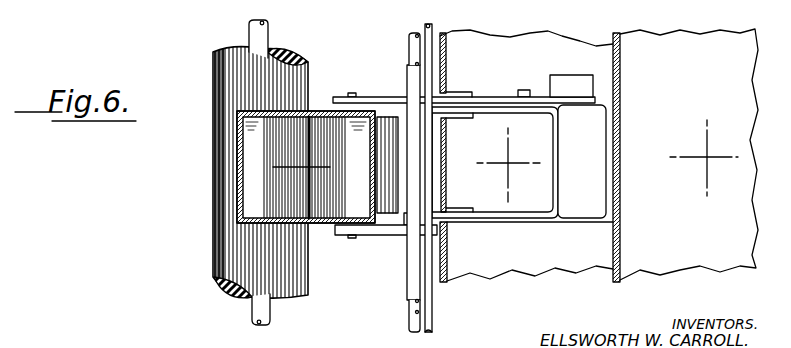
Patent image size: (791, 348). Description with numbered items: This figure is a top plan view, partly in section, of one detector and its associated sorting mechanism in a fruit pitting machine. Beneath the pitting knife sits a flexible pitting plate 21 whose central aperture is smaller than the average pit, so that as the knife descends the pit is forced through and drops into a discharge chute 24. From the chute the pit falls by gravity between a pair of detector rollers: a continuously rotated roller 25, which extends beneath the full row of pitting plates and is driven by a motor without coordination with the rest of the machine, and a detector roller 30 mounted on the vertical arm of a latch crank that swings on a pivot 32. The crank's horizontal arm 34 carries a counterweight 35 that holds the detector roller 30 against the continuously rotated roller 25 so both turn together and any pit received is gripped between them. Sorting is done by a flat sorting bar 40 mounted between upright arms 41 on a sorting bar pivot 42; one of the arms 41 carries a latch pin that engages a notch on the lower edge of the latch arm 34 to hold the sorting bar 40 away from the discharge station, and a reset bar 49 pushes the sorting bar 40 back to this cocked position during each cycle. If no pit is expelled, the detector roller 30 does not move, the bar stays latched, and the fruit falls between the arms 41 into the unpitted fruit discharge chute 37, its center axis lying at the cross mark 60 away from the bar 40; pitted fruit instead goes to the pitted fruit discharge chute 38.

The pitting plate 21 is at (268, 20).
The discharge chute 24 is at (310, 111).
The continuously rotated roller 25 is at (214, 173).
The detector roller 30 is at (387, 215).
The pivot 32 is at (408, 76).
The horizontal arm 34 is at (488, 97).
The counterweight 35 is at (584, 72).
The unpitted fruit discharge chute 37 is at (447, 251).
The pitted fruit discharge chute 38 is at (620, 128).
The sorting bar 40 is at (597, 172).
The upright arms 41 is at (508, 110).
The sorting bar pivot 42 is at (432, 28).
The reset bar 49 is at (410, 48).
The cross mark 60 is at (508, 163).